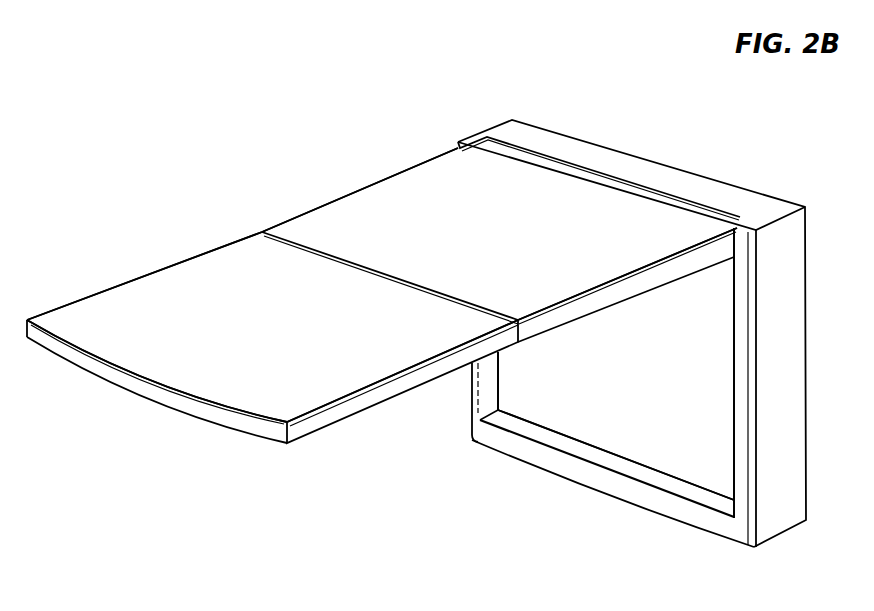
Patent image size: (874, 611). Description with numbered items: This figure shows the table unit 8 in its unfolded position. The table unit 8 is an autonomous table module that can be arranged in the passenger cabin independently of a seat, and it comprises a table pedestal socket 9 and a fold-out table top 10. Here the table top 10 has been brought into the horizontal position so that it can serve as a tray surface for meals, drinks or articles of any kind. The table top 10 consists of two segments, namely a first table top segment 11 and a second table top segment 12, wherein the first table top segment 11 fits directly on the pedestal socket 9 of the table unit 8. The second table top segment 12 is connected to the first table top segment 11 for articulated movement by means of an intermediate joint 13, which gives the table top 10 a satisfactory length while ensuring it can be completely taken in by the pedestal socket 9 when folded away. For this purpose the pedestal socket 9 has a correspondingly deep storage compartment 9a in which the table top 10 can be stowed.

The table unit 8 is at (141, 162).
The table pedestal socket 9 is at (759, 197).
The storage compartment 9a is at (673, 339).
The fold-out table top 10 is at (182, 223).
The first table top segment 11 is at (367, 198).
The second table top segment 12 is at (398, 388).
The intermediate joint 13 is at (261, 230).